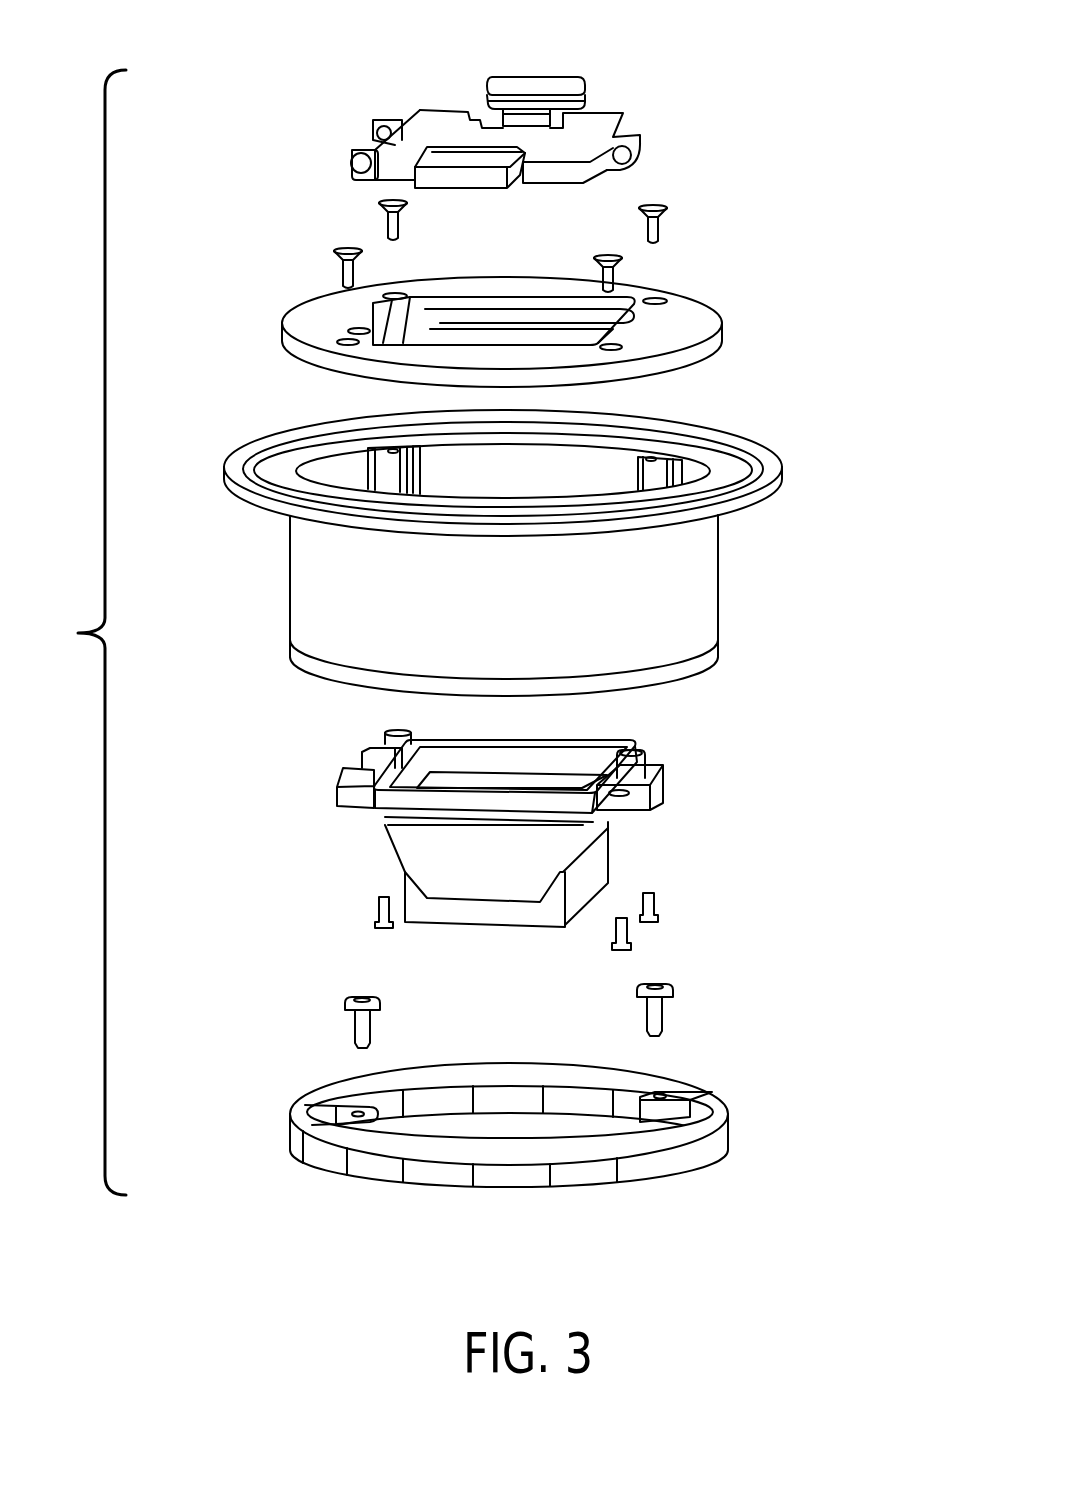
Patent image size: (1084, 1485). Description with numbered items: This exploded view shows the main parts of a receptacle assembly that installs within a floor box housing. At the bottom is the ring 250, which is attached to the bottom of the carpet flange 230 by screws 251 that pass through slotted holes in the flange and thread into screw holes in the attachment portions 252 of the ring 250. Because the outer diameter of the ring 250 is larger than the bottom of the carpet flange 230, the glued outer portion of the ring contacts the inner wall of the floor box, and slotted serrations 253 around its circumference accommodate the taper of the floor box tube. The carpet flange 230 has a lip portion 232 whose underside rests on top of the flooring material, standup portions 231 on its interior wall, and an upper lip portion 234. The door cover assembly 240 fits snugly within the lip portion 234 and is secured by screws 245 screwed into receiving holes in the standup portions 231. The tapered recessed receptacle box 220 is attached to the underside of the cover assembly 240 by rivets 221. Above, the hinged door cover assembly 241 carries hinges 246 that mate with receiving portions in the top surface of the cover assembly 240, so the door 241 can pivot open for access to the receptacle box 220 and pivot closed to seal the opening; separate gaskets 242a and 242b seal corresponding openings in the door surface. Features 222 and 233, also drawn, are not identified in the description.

The tapered recessed receptacle box 220 is at (410, 838).
The rivets 221 is at (378, 903).
The housing body 222 is at (547, 842).
The carpet flange 230 is at (695, 605).
The standup portions 231 is at (390, 455).
The lip portion 232 is at (275, 477).
The bottom band 233 is at (338, 672).
The lip portion 234 is at (300, 468).
The door cover assembly 240 is at (700, 320).
The hinged door cover assembly 241 is at (606, 113).
The gasket 242a is at (520, 88).
The gasket 242b is at (465, 158).
The screws 245 is at (347, 275).
The hinges 246 is at (357, 148).
The ring 250 is at (297, 1150).
The screws 251 is at (358, 1030).
The attachment portions 252 is at (335, 1110).
The slotted serrations 253 is at (398, 1182).